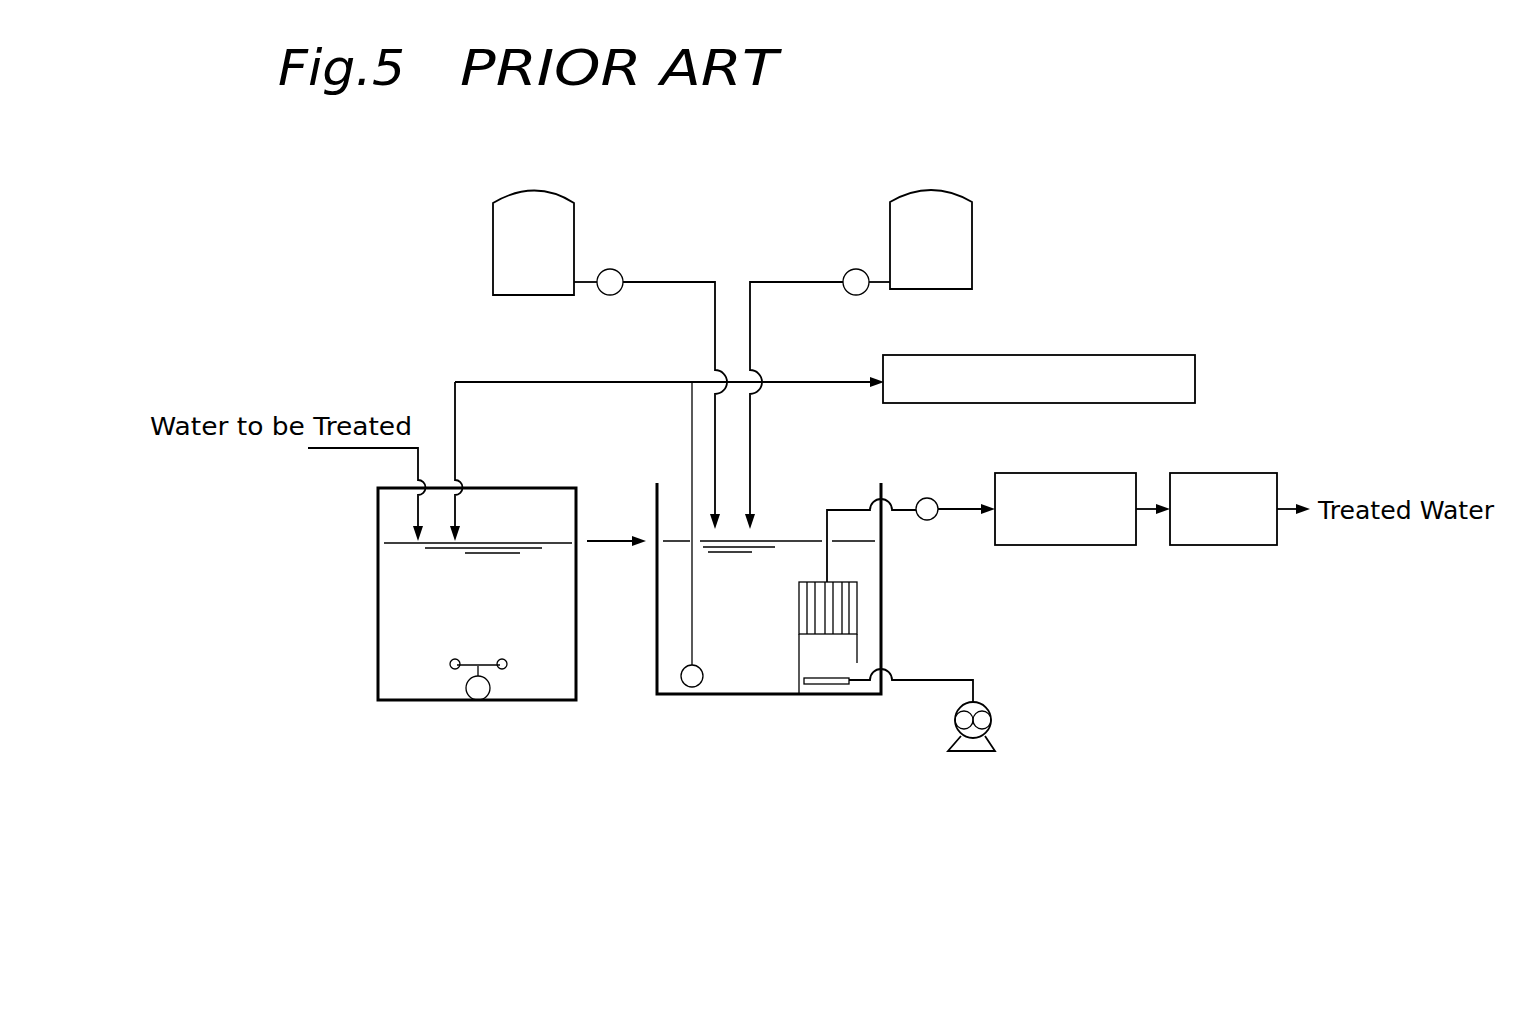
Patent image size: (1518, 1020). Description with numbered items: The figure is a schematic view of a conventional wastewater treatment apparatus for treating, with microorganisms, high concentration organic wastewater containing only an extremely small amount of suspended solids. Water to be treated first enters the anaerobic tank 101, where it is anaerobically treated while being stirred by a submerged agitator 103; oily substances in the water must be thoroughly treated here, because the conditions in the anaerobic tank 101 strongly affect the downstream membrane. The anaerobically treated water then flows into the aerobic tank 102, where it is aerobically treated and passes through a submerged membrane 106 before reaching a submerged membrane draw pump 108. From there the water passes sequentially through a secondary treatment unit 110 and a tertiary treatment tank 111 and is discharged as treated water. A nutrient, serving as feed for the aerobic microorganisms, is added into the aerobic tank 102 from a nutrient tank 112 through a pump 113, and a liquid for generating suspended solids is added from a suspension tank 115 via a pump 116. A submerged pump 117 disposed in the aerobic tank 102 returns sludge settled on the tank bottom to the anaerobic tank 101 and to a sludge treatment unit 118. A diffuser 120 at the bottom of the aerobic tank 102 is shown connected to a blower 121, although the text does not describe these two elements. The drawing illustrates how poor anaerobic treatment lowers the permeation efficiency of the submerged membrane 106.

The anaerobic tank 101 is at (372, 645).
The aerobic tank 102 is at (893, 648).
The submerged agitator 103 is at (480, 700).
The submerged membrane 106 is at (857, 607).
The submerged membrane draw pump 108 is at (927, 498).
The secondary treatment unit 110 is at (1062, 473).
The tertiary treatment tank 111 is at (1220, 473).
The nutrient tank 112 is at (558, 190).
The pump 113 is at (610, 269).
The suspension tank 115 is at (950, 189).
The pump 116 is at (856, 269).
The submerged pump 117 is at (692, 688).
The sludge treatment unit 118 is at (1033, 355).
The air diffuser 120 is at (830, 684).
The blower 121 is at (991, 722).